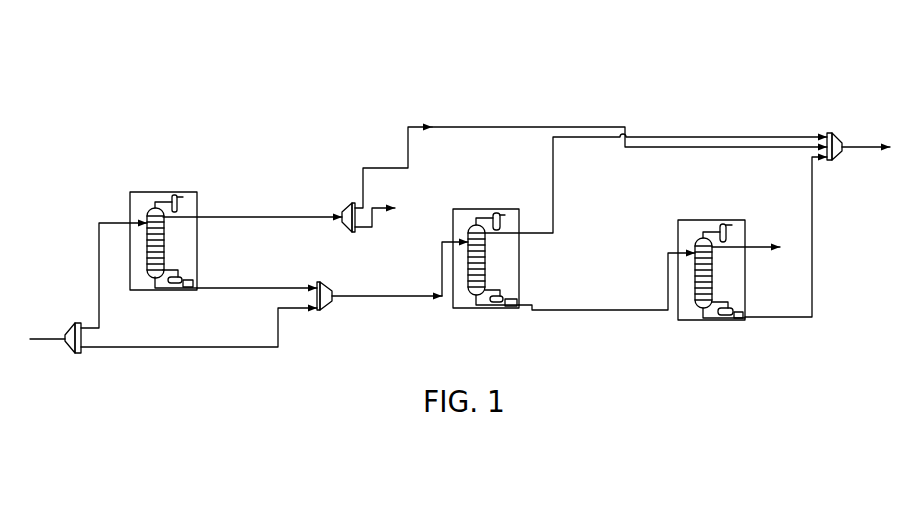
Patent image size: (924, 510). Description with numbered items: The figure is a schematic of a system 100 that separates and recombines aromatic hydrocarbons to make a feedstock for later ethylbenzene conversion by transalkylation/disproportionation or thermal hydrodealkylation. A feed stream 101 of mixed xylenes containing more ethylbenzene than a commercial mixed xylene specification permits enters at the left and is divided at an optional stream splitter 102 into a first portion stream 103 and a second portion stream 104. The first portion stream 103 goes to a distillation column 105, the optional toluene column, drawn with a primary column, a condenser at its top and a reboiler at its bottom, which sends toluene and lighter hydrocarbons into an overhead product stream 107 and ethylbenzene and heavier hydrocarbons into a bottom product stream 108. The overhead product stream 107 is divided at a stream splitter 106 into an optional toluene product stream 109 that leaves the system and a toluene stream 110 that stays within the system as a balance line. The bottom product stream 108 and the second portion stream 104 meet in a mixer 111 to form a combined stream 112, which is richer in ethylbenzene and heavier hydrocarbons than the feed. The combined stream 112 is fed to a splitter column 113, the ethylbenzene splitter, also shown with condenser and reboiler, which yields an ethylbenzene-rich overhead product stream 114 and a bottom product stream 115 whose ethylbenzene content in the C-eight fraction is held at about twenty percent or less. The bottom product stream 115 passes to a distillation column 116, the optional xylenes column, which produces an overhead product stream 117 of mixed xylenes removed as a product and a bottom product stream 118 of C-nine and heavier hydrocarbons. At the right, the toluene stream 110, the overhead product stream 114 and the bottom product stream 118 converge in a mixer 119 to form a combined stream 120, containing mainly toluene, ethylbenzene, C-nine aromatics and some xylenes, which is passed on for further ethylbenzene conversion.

The system 100 is at (189, 38).
The feed stream 101 is at (48, 342).
The stream splitter 102 is at (68, 325).
The first portion stream 103 is at (105, 222).
The second portion stream 104 is at (143, 350).
The distillation column 105 is at (136, 192).
The stream splitter 106 is at (342, 207).
The overhead product stream 107 is at (229, 216).
The bottom product stream 108 is at (236, 291).
The toluene product stream 109 is at (380, 206).
The toluene stream 110 is at (486, 127).
The mixer 111 is at (334, 290).
The combined stream 112 is at (441, 266).
The splitter column 113 is at (497, 209).
The overhead product stream 114 is at (548, 234).
The bottom product stream 115 is at (528, 312).
The distillation column 116 is at (690, 220).
The overhead product stream 117 is at (755, 242).
The bottom product stream 118 is at (800, 318).
The mixer 119 is at (837, 132).
The combined stream 120 is at (865, 150).